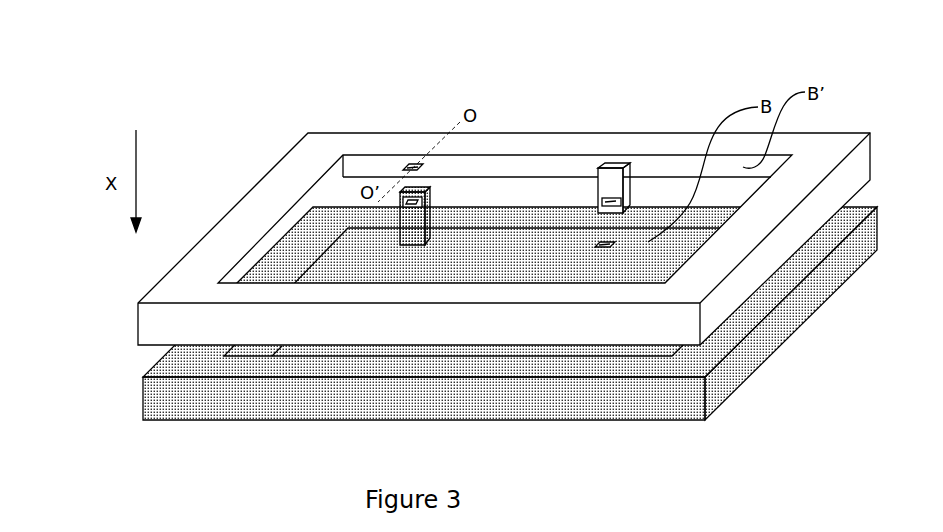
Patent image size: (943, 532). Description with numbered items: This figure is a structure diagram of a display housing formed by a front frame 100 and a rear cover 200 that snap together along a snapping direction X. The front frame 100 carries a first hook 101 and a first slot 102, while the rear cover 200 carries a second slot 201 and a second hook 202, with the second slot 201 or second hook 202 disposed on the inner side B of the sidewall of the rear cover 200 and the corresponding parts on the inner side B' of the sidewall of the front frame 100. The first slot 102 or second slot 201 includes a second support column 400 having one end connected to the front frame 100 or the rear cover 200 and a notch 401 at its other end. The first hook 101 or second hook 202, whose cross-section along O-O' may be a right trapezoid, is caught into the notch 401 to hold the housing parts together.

The front frame 100 is at (303, 162).
The first hook 101 is at (412, 167).
The first slot 102 is at (562, 132).
The rear cover 200 is at (162, 402).
The second slot 201 is at (515, 207).
The second hook 202 is at (597, 248).
The second support column 400 is at (607, 175).
The notch 401 is at (617, 202).